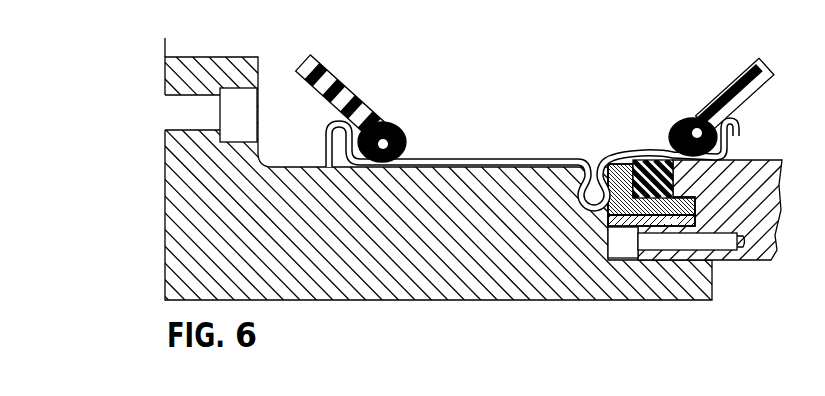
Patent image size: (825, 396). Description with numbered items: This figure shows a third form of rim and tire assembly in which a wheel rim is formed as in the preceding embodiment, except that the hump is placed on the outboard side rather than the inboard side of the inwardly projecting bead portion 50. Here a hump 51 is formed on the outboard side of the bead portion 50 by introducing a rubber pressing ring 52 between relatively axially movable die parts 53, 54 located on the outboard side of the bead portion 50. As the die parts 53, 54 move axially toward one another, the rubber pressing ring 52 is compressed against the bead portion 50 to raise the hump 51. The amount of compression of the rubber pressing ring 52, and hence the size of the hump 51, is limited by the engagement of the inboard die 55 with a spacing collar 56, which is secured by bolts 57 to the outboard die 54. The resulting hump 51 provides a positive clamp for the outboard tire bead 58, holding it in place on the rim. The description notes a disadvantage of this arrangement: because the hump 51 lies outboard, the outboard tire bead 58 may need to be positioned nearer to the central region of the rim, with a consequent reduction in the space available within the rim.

The inwardly projecting bead portion 50 is at (580, 205).
The hump 51 is at (661, 158).
The rubber pressing ring 52 is at (638, 165).
The die part 53 is at (599, 162).
The outboard die 54 is at (750, 159).
The inboard die 55 is at (391, 290).
The spacing collar 56 is at (653, 260).
The bolts 57 is at (621, 251).
The outboard tire bead 58 is at (681, 128).